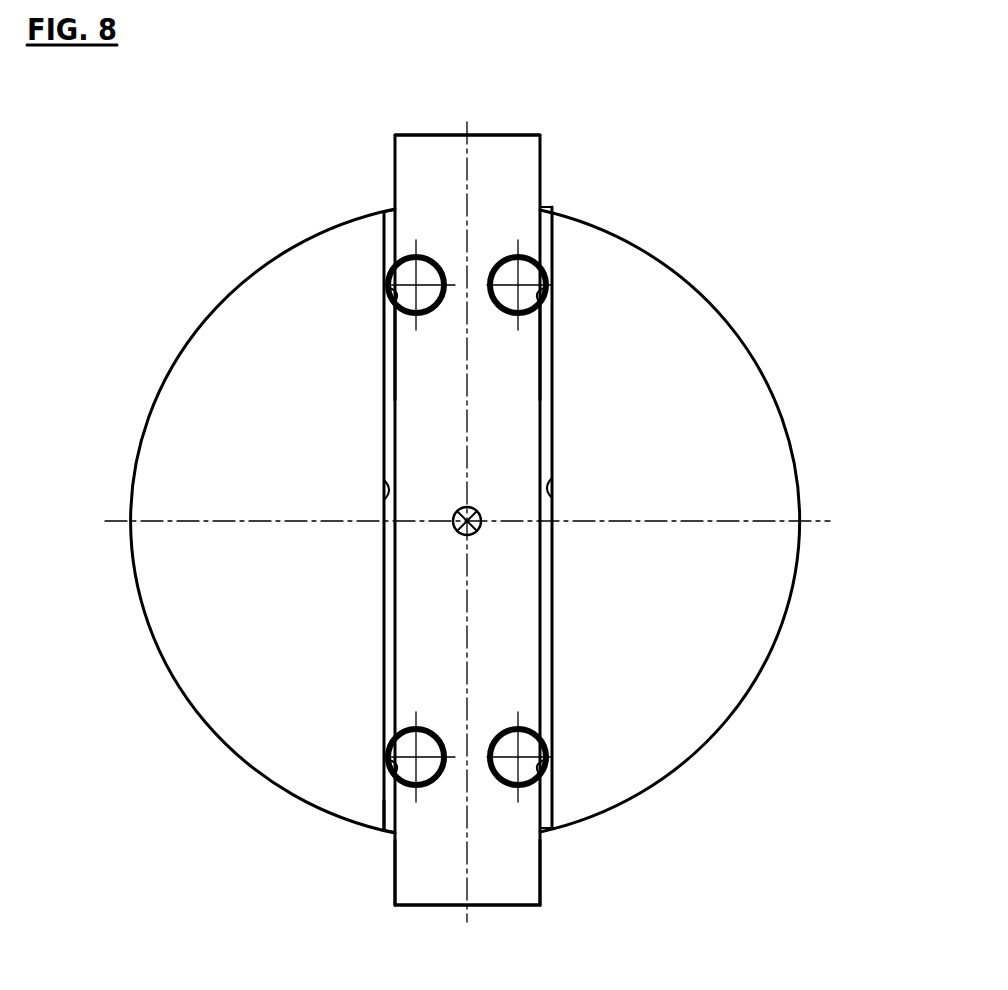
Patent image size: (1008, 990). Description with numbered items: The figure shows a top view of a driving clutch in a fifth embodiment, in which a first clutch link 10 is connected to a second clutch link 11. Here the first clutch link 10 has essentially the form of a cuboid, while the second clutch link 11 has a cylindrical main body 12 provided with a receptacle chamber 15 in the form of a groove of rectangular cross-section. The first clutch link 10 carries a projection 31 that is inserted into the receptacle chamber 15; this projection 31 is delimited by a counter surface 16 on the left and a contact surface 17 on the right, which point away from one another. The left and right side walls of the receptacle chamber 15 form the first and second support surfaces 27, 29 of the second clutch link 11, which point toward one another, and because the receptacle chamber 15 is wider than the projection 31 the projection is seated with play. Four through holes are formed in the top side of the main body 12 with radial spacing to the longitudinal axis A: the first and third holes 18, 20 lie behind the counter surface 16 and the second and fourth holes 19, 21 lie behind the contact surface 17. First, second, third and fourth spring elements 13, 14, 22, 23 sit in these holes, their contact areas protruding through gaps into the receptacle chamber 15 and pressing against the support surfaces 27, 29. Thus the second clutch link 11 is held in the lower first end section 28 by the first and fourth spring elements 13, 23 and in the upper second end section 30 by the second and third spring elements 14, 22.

The first clutch link 10 is at (424, 124).
The second clutch link 11 is at (318, 205).
The main body 12 is at (498, 134).
The first spring element 13 is at (384, 755).
The second spring element 14 is at (552, 278).
The receptacle chamber 15 is at (545, 225).
The counter surface 16 is at (384, 355).
The contact surface 17 is at (553, 358).
The first hole 18 is at (398, 724).
The second hole 19 is at (540, 240).
The third hole 20 is at (405, 258).
The fourth hole 21 is at (551, 712).
The third spring element 22 is at (384, 283).
The fourth spring element 23 is at (552, 753).
The first support surface 27 is at (384, 495).
The first end section 28 is at (384, 830).
The second support surface 29 is at (552, 490).
The second end section 30 is at (384, 212).
The projection 31 is at (413, 905).
The longitudinal axis A is at (478, 532).